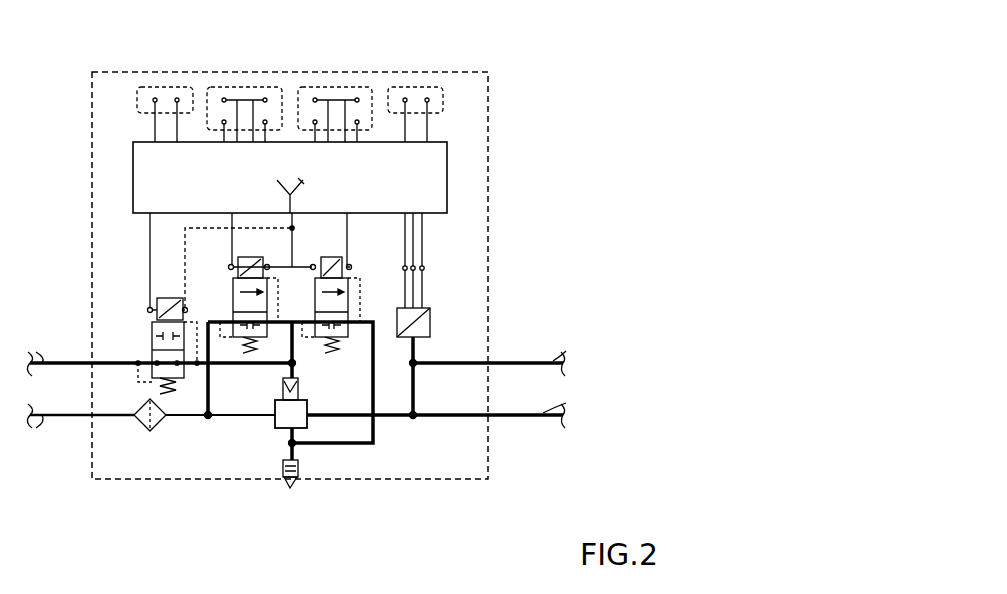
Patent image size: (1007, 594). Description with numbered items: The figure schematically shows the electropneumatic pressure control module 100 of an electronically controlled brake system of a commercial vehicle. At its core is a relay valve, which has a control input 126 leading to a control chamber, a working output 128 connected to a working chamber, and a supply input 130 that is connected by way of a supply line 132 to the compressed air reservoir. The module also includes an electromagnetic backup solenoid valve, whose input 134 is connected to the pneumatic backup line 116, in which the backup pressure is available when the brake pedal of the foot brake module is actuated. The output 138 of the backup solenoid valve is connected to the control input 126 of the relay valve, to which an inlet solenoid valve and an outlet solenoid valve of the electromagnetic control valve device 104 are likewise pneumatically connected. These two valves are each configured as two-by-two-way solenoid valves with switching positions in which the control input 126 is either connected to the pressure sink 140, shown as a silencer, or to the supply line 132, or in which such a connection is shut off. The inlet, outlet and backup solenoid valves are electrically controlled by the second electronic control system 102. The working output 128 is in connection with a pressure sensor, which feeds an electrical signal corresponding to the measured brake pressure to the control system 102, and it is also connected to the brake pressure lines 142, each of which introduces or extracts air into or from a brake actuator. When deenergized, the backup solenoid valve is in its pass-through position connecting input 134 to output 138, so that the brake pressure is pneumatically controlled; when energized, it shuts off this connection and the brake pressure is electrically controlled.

The electropneumatic pressure control module 100 is at (604, 93).
The second electronic control system 102 is at (447, 172).
The electromagnetic control valve device 104 is at (206, 260).
The pneumatic backup line 116 is at (152, 350).
The control input 126 is at (298, 381).
The working output 128 is at (307, 411).
The supply input 130 is at (275, 407).
The supply line 132 is at (110, 429).
The input of the backup solenoid valve 134 is at (152, 363).
The output of the backup solenoid valve 138 is at (190, 360).
The pressure sink 140 is at (290, 488).
The brake pressure lines 142 is at (453, 380).